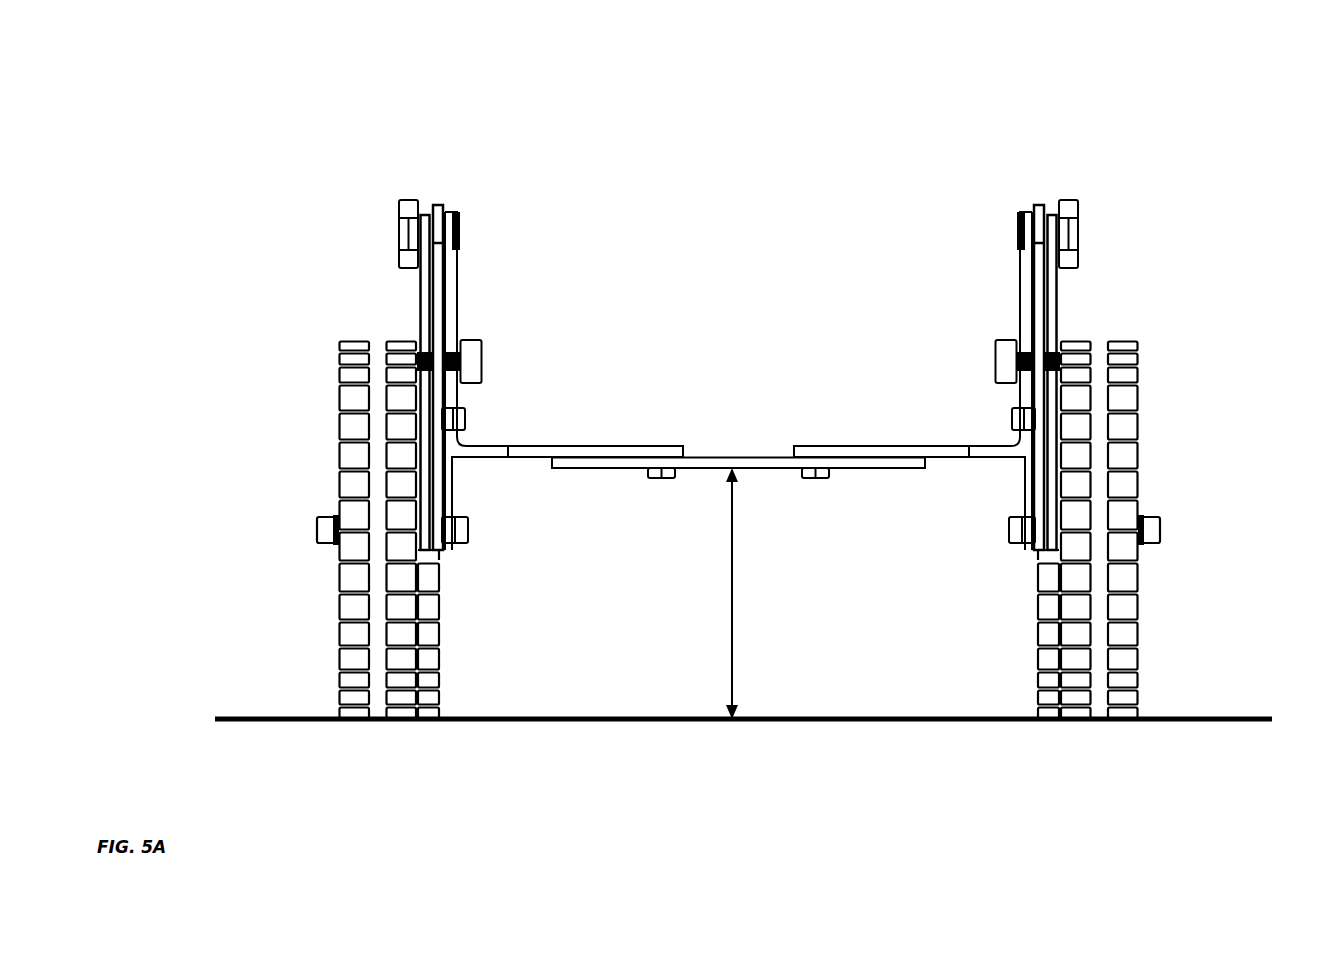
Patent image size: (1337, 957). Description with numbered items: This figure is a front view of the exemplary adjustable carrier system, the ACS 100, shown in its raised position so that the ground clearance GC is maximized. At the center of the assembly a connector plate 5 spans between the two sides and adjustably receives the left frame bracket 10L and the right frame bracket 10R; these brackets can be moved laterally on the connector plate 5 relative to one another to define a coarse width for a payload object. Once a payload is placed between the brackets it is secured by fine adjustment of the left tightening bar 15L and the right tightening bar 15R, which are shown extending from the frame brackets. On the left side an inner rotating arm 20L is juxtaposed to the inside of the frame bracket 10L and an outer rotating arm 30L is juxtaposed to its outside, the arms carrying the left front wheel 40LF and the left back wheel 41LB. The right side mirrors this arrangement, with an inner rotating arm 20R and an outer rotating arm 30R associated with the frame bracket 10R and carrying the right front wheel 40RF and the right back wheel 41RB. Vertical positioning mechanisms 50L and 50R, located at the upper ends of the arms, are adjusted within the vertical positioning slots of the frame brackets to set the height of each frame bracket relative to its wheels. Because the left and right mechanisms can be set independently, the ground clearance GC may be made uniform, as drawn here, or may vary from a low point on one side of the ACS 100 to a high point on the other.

The ACS 100 is at (1257, 110).
The left front wheel 40LF is at (338, 654).
The left back wheel 41LB is at (440, 657).
The left outer rotating arm 30L is at (405, 298).
The left inner rotating arm 20L is at (458, 284).
The left vertical positioning mechanism 50L is at (400, 232).
The left tightening bar 15L is at (483, 358).
The left frame bracket 10L is at (578, 446).
The right front wheel 40RF is at (1140, 655).
The right back wheel 41RB is at (1037, 656).
The right outer rotating arm 30R is at (1070, 307).
The right inner rotating arm 20R is at (1020, 284).
The right vertical positioning mechanism 50R is at (1080, 230).
The right tightening bar 15R is at (994, 357).
The right frame bracket 10R is at (900, 446).
The connector plate 5 is at (763, 468).
The ground clearance GC is at (730, 650).